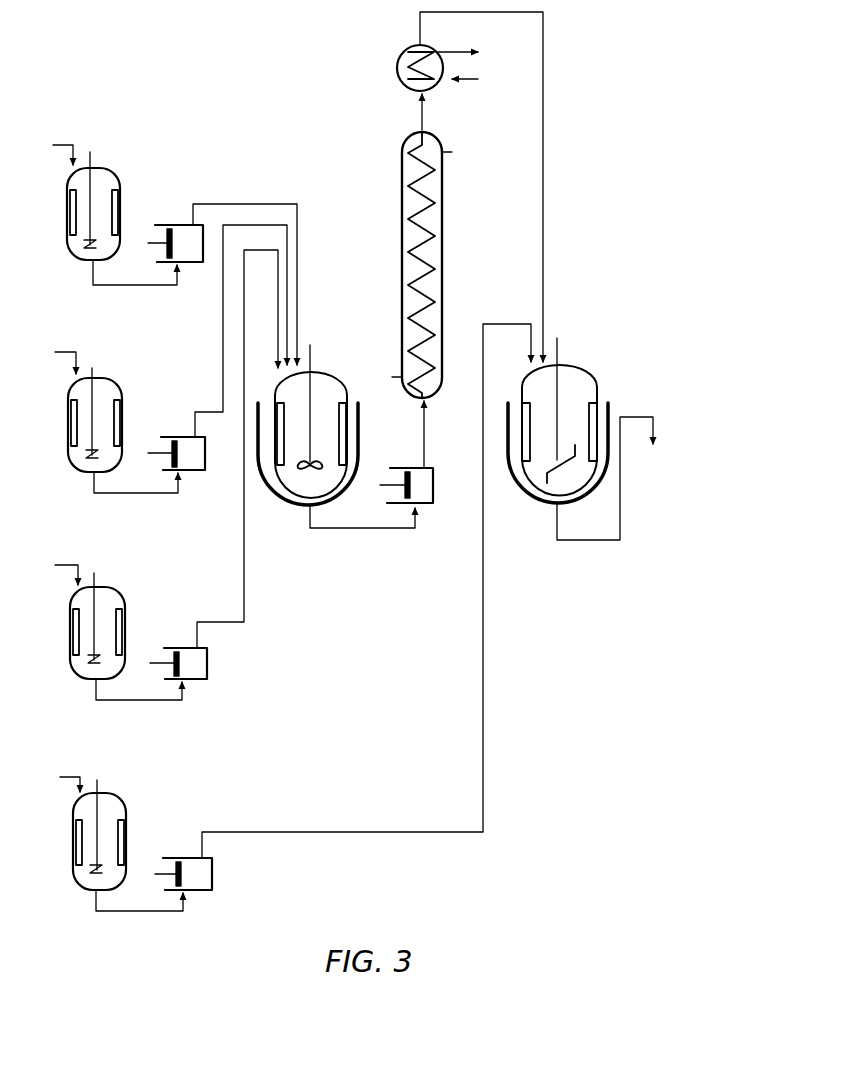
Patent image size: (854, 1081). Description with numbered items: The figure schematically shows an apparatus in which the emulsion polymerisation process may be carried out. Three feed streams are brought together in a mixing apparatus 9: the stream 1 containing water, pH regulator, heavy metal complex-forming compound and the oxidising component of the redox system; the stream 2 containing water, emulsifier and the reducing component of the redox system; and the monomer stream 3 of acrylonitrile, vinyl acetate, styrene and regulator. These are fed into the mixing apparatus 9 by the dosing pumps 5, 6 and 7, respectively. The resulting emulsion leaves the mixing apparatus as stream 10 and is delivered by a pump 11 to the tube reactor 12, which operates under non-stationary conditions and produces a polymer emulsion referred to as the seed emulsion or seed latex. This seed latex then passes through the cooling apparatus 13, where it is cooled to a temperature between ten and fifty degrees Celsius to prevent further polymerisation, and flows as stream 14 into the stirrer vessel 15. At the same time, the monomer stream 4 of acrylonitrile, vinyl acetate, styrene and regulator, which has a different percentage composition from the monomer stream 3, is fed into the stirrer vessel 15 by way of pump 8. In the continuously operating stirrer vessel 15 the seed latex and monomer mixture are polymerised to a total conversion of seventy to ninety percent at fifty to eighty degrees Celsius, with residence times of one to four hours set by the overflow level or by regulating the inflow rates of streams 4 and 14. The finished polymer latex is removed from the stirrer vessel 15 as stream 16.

The stream containing water, pH regulator, heavy metal complex-forming compound and 1 is at (141, 287).
The stream containing water, emulsifier and reducing component 2 is at (141, 496).
The monomer stream 3 is at (143, 701).
The monomer stream 4 is at (148, 913).
The dosing pump 5 is at (179, 226).
The dosing pump 6 is at (183, 437).
The dosing pump 7 is at (186, 648).
The pump 8 is at (189, 858).
The mixing apparatus 9 is at (325, 384).
The stream 10 is at (368, 531).
The pump 11 is at (420, 470).
The tube reactor 12 is at (403, 230).
The cooling apparatus 13 is at (400, 67).
The stream 14 is at (494, 14).
The stirrer vessel 15 is at (572, 374).
The stream 16 is at (612, 478).